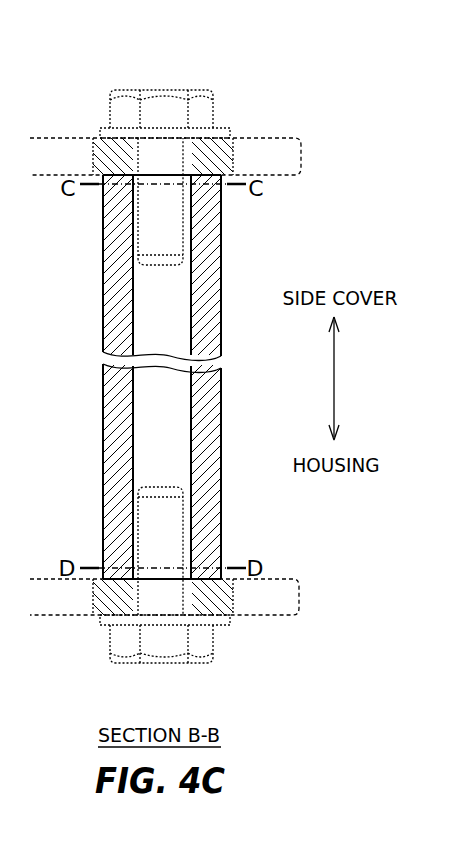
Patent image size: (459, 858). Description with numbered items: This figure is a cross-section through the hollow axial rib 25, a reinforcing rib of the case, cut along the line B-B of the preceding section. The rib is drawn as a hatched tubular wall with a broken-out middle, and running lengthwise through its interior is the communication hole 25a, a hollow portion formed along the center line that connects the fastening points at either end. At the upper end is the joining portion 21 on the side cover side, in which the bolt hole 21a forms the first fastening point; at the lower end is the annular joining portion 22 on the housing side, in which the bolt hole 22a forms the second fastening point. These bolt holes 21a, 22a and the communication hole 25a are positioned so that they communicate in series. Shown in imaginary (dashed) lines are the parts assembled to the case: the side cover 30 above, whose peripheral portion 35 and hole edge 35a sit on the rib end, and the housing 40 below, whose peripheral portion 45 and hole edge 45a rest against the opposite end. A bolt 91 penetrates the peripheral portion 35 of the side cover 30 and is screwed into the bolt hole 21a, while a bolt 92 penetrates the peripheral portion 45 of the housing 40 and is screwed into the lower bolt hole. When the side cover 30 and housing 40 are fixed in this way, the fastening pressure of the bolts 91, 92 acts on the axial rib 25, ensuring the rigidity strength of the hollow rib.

The joining portion 21 is at (106, 183).
The bolt hole 21a is at (190, 200).
The joining portion 22 is at (108, 563).
The bolt hole 22a is at (190, 556).
The axial rib 25 is at (115, 400).
The communication hole 25a is at (140, 443).
The side cover 30 is at (303, 155).
The peripheral portion 35 is at (233, 150).
The side cover hole edge 35a is at (100, 134).
The housing 40 is at (301, 600).
The peripheral portion 45 is at (232, 606).
The housing hole edge 45a is at (102, 618).
The bolt 91 is at (200, 94).
The bolt 92 is at (201, 662).